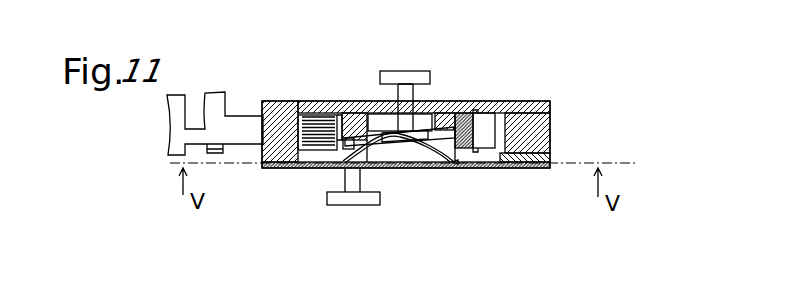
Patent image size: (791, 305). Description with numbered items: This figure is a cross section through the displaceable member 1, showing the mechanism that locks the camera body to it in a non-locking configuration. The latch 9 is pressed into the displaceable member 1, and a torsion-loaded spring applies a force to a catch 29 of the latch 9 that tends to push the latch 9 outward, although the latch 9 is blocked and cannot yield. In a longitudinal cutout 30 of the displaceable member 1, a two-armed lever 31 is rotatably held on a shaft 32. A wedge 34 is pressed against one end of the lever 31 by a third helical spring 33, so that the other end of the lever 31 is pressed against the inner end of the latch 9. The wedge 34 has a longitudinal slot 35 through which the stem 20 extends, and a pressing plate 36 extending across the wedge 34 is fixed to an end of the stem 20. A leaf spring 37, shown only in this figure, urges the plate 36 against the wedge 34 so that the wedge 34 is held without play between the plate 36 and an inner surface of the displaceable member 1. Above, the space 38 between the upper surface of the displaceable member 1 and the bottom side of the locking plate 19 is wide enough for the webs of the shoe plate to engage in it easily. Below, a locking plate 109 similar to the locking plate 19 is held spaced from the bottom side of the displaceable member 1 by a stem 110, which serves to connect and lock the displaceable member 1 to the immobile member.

The displaceable member 1 is at (548, 114).
The latch 9 is at (338, 118).
The locking plate 19 is at (408, 72).
The stem 20 is at (376, 100).
The catch 29 is at (342, 140).
The longitudinal cutout 30 is at (549, 150).
The two-armed lever 31 is at (488, 122).
The shaft 32 is at (476, 151).
The third helical spring 33 is at (315, 143).
The wedge 34 is at (350, 118).
The longitudinal slot 35 is at (398, 136).
The pressing plate 36 is at (413, 141).
The leaf spring 37 is at (383, 150).
The space 38 is at (425, 96).
The locking plate 109 is at (350, 197).
The stem 110 is at (346, 178).